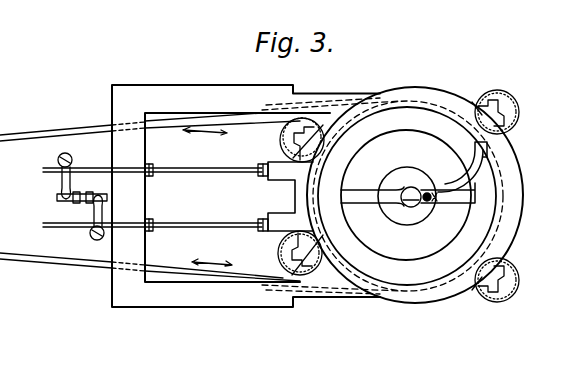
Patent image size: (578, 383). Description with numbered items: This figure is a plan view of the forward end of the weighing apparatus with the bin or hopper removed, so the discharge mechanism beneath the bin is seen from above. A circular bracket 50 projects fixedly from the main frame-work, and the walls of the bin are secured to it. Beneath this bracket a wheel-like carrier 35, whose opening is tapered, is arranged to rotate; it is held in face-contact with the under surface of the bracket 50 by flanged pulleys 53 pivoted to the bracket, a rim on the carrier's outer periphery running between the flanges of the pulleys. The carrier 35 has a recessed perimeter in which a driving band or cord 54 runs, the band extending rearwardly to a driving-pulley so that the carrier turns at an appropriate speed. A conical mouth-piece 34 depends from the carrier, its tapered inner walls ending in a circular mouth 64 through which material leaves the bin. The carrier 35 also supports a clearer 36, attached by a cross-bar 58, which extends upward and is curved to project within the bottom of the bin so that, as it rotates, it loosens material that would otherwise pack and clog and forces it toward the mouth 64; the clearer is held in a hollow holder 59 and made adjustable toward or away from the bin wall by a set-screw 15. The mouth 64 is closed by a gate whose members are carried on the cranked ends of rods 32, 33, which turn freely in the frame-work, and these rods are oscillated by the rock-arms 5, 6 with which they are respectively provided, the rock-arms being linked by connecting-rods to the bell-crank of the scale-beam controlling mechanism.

The rock-arm 5 is at (71, 191).
The rock-arm 6 is at (93, 209).
The set-screw 15 is at (417, 204).
The rod 32 is at (203, 176).
The rod 33 is at (210, 231).
The conical mouth-piece 34 is at (406, 195).
The wheel-like carrier 35 is at (408, 196).
The clearer 36 is at (467, 173).
The circular bracket 50 is at (521, 195).
The pulleys 53 is at (525, 288).
The driving band 54 is at (65, 268).
The cross-bar 58 is at (408, 194).
The hollow holder 59 is at (419, 197).
The circular mouth 64 is at (407, 196).